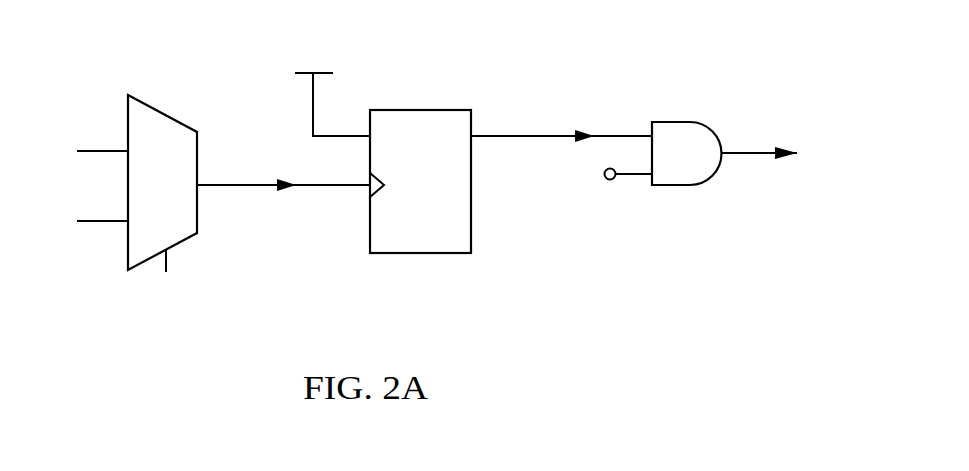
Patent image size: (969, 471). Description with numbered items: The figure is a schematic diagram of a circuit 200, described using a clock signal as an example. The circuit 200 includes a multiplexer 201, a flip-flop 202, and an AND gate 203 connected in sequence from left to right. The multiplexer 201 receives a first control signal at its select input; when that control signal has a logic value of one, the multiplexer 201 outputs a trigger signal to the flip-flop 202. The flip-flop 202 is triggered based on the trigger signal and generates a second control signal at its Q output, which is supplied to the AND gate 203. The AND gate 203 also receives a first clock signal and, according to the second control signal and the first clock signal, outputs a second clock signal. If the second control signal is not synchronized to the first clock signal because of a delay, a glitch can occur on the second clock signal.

The circuit 200 is at (413, 31).
The multiplexer 201 is at (173, 118).
The flip-flop 202 is at (431, 110).
The AND gate 203 is at (684, 122).